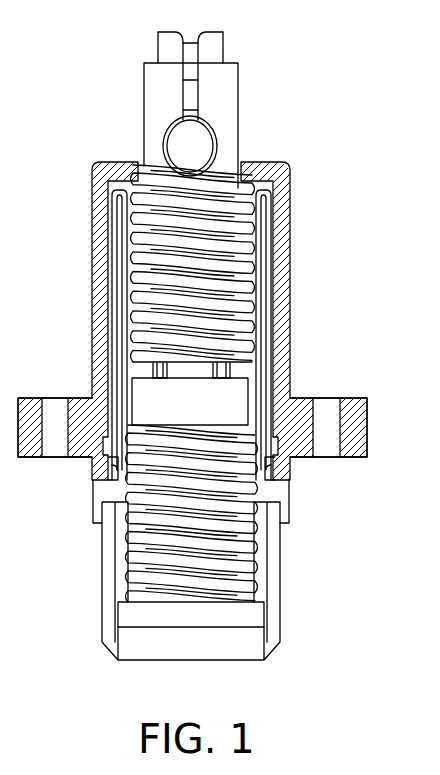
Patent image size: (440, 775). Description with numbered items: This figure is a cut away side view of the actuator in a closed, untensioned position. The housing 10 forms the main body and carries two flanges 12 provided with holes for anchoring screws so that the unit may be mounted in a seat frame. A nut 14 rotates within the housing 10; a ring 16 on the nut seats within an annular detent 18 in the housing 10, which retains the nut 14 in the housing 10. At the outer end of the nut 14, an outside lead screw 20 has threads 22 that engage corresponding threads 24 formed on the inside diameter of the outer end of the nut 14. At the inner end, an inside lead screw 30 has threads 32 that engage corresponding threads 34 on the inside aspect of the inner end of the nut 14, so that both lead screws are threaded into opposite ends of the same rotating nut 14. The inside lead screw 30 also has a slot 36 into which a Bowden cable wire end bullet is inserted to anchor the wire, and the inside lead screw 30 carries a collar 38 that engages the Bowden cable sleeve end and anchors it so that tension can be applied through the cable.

The housing 10 is at (292, 250).
The flanges 12 is at (367, 425).
The nut 14 is at (282, 632).
The ring 16 is at (113, 462).
The annular detent 18 is at (280, 460).
The outside lead screw 20 is at (212, 622).
The threads 22 is at (188, 572).
The threads 24 is at (130, 557).
The inside lead screw 30 is at (227, 123).
The threads 32 is at (208, 217).
The threads 34 is at (132, 240).
The slot 36 is at (192, 95).
The collar 38 is at (157, 34).